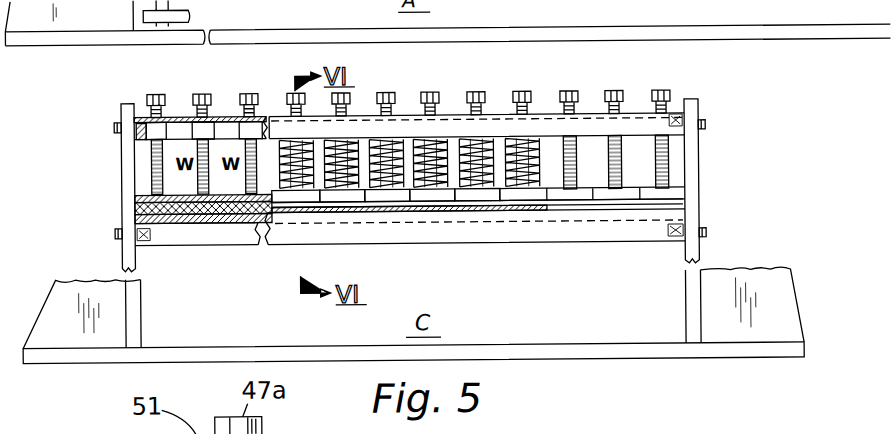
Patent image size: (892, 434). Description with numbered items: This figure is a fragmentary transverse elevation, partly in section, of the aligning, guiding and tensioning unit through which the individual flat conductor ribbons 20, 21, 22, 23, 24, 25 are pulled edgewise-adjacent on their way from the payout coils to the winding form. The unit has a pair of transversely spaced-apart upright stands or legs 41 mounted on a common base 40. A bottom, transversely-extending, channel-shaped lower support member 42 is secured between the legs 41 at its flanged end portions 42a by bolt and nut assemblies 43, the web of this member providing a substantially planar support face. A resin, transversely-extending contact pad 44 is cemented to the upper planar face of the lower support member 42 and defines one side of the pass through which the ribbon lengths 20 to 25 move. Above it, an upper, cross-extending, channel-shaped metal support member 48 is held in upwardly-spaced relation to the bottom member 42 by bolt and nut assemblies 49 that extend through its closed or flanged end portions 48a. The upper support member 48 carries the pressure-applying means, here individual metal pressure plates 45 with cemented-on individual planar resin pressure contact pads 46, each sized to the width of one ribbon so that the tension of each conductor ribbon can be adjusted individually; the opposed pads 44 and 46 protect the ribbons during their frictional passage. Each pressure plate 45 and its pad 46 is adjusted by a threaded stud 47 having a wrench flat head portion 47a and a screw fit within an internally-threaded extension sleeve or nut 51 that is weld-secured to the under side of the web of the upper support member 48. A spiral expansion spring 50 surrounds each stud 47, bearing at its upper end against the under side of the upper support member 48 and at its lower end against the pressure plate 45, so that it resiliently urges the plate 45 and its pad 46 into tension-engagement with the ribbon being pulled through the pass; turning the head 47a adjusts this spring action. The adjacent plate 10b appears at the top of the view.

The upper plate 10b is at (772, 43).
The conductor ribbon 20 is at (304, 211).
The conductor ribbon 21 is at (351, 211).
The conductor ribbon 22 is at (398, 211).
The conductor ribbon 23 is at (446, 211).
The conductor ribbon 24 is at (494, 211).
The conductor ribbon 25 is at (544, 211).
The base 40 is at (210, 346).
The upright stands or legs 41 is at (124, 253).
The lower support member 42 is at (590, 244).
The flanged end portions 42a is at (142, 245).
The bolt and nut assemblies 43 is at (706, 233).
The contact pad 44 is at (138, 214).
The pressure plates 45 is at (148, 192).
The pressure contact pads 46 is at (136, 203).
The threaded stud 47 is at (152, 150).
The wrench flat head portion 47a is at (437, 88).
The upper support member 48 is at (634, 114).
The flanged end portions 48a is at (140, 115).
The bolt and nut assemblies 49 is at (116, 123).
The spiral expansion spring 50 is at (545, 150).
The extension sleeve or nut 51 is at (215, 135).